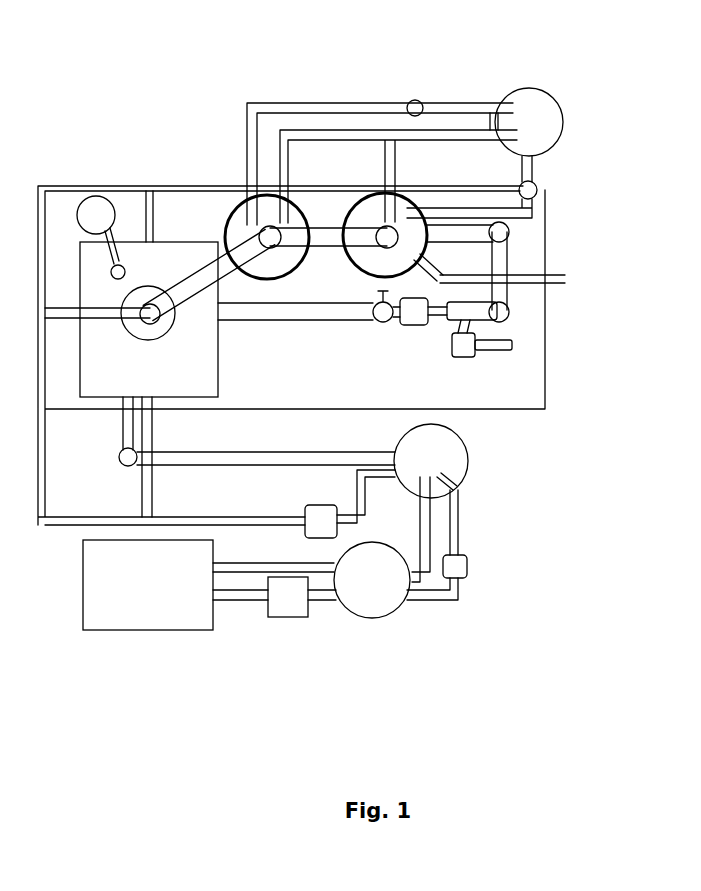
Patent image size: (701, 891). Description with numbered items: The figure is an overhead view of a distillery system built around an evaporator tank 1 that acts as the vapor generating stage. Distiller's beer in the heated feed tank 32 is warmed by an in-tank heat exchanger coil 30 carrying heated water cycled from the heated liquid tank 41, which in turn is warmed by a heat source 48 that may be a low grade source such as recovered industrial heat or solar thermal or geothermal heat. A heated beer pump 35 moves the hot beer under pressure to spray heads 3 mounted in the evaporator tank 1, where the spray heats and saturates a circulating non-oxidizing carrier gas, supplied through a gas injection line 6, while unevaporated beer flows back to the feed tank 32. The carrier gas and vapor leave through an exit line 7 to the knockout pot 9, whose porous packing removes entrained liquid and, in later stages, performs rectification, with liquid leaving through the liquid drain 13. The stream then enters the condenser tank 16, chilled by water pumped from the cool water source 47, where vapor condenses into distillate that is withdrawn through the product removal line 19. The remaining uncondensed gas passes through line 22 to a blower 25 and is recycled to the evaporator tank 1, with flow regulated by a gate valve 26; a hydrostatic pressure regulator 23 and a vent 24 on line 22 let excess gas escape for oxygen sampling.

The evaporator tank 1 is at (202, 360).
The spray heads 3 is at (157, 222).
The non-oxidizing gas injection line 6 is at (92, 197).
The carrier gas/vapor exit line 7 is at (237, 288).
The knockout pot 9 is at (238, 198).
The knock-out pot liquid drain 13 is at (297, 103).
The condenser tank 16 is at (363, 213).
The product removal line 19 is at (548, 272).
The line 22 is at (508, 242).
The hydrostatic pressure regulator 23 is at (470, 357).
The vent 24 is at (503, 333).
The blower 25 is at (415, 325).
The gate valve 26 is at (383, 323).
The heat exchanger coil 30 is at (463, 470).
The heated feed tank 32 is at (455, 447).
The heated beer pump 35 is at (315, 518).
The heated liquid tank 41 is at (380, 592).
The cool water source 47 is at (532, 110).
The heat source 48 is at (205, 608).